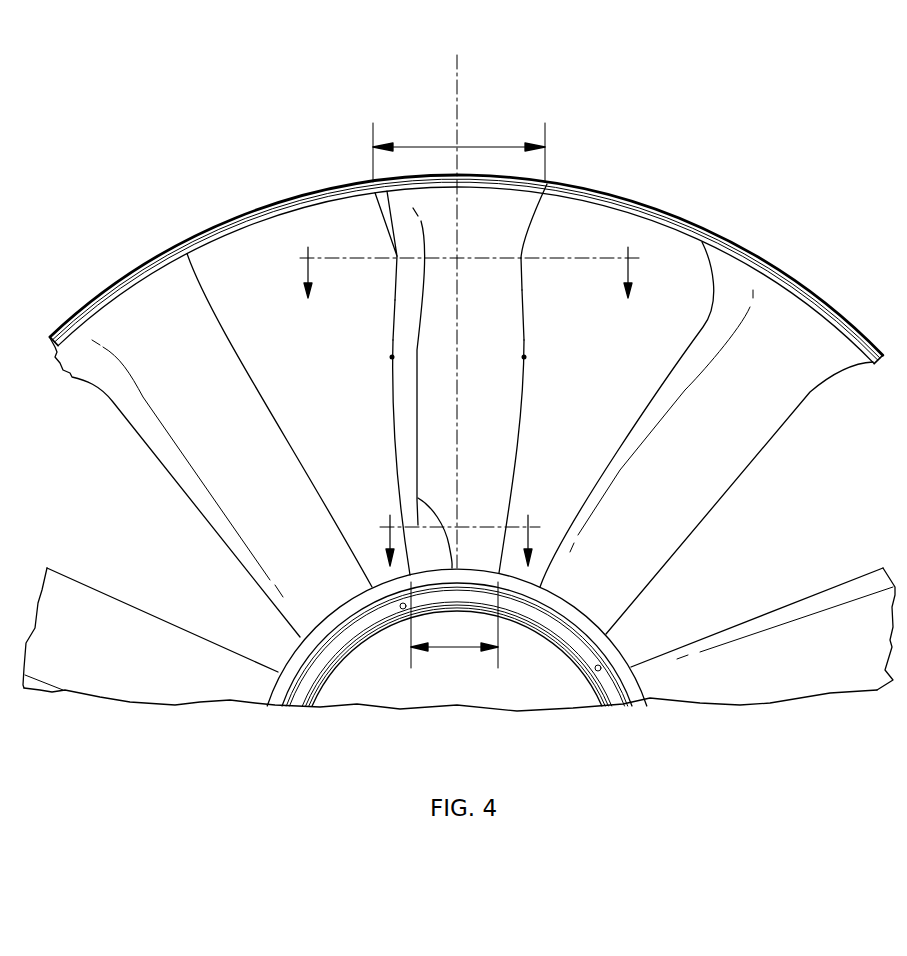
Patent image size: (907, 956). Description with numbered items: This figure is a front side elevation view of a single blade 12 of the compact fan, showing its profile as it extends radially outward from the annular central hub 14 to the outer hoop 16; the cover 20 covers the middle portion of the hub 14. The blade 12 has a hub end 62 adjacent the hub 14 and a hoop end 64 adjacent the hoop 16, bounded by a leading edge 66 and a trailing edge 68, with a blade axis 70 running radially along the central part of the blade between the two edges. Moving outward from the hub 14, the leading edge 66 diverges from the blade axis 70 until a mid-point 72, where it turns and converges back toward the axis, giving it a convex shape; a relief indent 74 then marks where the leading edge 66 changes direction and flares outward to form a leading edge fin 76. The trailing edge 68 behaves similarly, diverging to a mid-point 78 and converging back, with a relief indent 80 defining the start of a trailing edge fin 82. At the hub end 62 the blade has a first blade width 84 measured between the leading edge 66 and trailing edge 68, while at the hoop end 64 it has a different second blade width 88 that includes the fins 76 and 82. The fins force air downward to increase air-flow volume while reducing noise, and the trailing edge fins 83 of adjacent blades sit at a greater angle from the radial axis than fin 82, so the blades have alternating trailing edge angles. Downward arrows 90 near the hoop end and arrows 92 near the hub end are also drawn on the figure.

The blade 12 is at (467, 379).
The central hub 14 is at (602, 648).
The outer hoop 16 is at (767, 263).
The cover 20 is at (555, 653).
The hub end 62 is at (418, 498).
The hoop end 64 is at (546, 190).
The leading edge 66 is at (526, 313).
The trailing edge 68 is at (393, 306).
The blade axis 70 is at (458, 81).
The mid-point 72 is at (525, 357).
The relief indent 74 is at (522, 246).
The leading edge fin 76 is at (519, 211).
The mid-point 78 is at (391, 357).
The relief indent 80 is at (396, 264).
The trailing edge fin 82 is at (387, 211).
The trailing edge fin 83 is at (720, 277).
The first blade width 84 is at (452, 650).
The second blade width 88 is at (477, 146).
The tip direction arrows 90 is at (305, 272).
The root direction arrows 92 is at (400, 511).